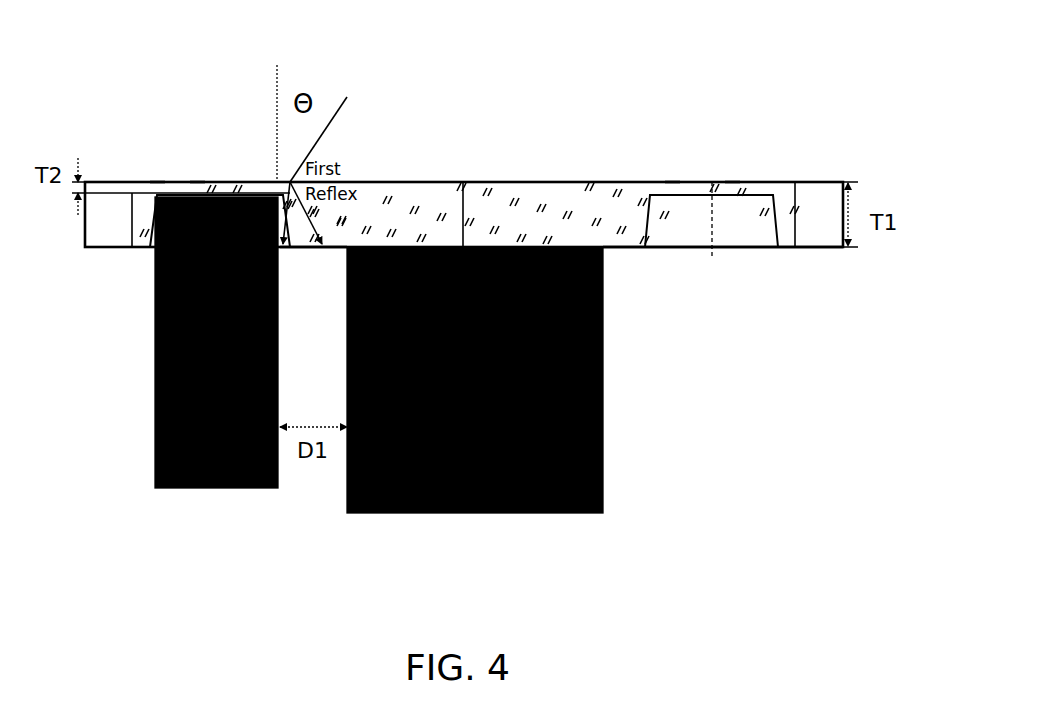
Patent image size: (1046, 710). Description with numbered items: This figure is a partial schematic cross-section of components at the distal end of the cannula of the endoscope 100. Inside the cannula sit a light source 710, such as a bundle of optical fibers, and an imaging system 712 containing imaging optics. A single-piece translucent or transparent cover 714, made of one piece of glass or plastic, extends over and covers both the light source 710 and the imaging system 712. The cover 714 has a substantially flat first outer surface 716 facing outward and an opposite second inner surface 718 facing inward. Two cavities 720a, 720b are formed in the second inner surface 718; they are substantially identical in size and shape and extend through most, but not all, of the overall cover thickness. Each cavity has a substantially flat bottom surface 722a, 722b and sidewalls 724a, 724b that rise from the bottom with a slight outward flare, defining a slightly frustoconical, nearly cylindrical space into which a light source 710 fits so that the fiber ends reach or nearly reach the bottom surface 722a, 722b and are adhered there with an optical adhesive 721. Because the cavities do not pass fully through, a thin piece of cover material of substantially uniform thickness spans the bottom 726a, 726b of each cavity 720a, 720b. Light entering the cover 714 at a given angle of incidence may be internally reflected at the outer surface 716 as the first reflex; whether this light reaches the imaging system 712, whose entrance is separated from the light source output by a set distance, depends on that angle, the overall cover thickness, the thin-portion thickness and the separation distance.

The endoscope 100 is at (848, 108).
The light source 710 is at (140, 432).
The imaging system 712 is at (608, 437).
The single-piece translucent or transparent cover 714 is at (80, 220).
The first outer surface 716 is at (467, 182).
The second inner surface 718 is at (628, 258).
The cavity 720a is at (153, 253).
The cavity 720b is at (735, 250).
The optical adhesive 721 is at (224, 182).
The flat bottom surface 722a is at (157, 185).
The flat bottom surface 722b is at (673, 185).
The sidewall 724a is at (283, 248).
The sidewall 724b is at (790, 248).
The cavity bottom 726a is at (198, 185).
The cavity bottom 726b is at (733, 185).